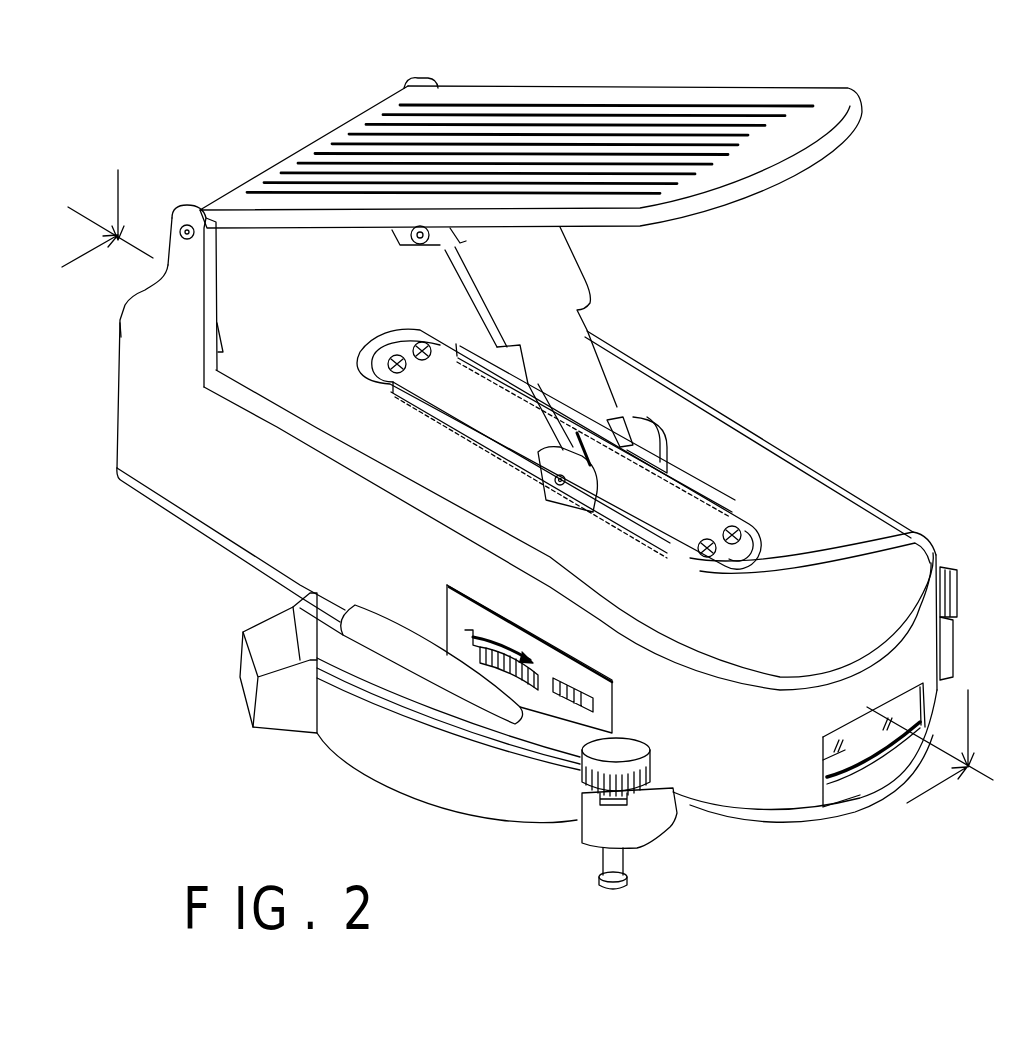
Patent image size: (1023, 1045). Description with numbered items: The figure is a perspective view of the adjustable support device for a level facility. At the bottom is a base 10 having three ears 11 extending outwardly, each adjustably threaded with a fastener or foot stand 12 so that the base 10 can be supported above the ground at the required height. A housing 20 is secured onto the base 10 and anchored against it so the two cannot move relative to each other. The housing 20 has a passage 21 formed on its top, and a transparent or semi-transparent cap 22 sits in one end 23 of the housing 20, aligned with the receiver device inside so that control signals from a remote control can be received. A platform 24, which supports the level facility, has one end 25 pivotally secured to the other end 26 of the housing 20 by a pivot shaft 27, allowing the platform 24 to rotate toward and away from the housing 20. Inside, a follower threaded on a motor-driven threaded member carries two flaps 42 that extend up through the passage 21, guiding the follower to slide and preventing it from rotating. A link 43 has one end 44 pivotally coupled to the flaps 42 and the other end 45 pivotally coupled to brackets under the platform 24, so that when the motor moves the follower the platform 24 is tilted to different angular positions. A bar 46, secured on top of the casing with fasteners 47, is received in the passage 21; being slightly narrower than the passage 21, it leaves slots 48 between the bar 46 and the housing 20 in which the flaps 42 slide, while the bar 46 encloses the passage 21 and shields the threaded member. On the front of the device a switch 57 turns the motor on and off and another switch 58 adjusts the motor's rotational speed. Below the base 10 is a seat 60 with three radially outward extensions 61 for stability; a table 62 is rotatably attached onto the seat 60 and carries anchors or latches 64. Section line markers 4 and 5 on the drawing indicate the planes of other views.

The section line 4- 4 is at (510, 527).
The section line 5- 5 is at (532, 475).
The base 10 is at (190, 517).
The ears 11 is at (643, 827).
The fasteners or foot stands 12 is at (607, 860).
The housing 20 is at (843, 503).
The passage 21 is at (687, 480).
The cap 22 is at (863, 757).
The one end of the housing 23 is at (800, 773).
The platform 24 is at (787, 97).
The one end of the platform 25 is at (531, 129).
The other end of the housing 26 is at (147, 290).
The pivot shaft 27 is at (187, 230).
The flaps 42 is at (647, 427).
The link 43 is at (573, 283).
The one end of the link 44 is at (617, 407).
The other end of the link 45 is at (478, 252).
The bar 46 is at (687, 530).
The fasteners 47 is at (745, 542).
The slots 48 is at (733, 497).
The switch 57 is at (565, 703).
The switch 58 is at (513, 690).
The seat 60 is at (417, 793).
The extensions 61 is at (277, 717).
The table 62 is at (383, 710).
The anchors or latches 64 is at (453, 700).